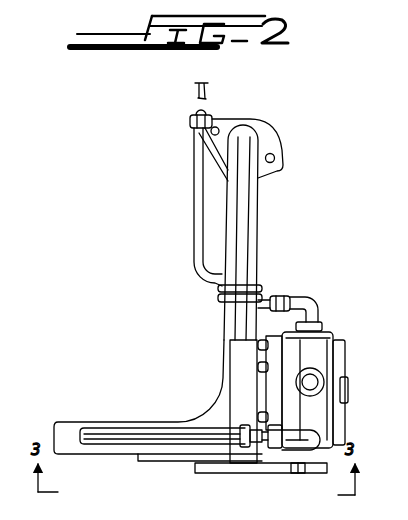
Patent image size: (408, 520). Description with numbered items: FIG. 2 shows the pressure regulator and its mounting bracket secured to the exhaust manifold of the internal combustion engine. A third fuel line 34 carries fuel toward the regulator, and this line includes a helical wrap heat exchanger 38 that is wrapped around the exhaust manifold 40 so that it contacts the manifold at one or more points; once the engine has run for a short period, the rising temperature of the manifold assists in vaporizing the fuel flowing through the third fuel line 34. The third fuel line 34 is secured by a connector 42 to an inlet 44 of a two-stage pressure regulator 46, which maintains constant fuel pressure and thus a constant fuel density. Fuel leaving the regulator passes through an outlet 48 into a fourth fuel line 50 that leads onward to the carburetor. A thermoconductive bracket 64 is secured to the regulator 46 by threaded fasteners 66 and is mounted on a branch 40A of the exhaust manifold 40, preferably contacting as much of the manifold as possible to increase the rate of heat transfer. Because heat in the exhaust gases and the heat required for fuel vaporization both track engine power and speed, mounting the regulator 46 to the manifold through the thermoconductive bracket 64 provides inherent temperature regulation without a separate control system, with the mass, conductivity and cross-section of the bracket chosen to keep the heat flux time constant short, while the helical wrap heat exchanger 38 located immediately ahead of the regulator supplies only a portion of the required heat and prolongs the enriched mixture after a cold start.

The third fuel line 34 is at (194, 222).
The helical wrap heat exchanger 38 is at (212, 301).
The exhaust manifold 40 is at (252, 211).
The branch of the exhaust manifold 40A is at (88, 432).
The connector 42 is at (303, 298).
The inlet 44 is at (320, 328).
The two-stage pressure regulator 46 is at (341, 362).
The outlet 48 is at (287, 456).
The fourth fuel line 50 is at (112, 446).
The thermoconductive bracket 64 is at (245, 368).
The threaded fasteners 66 is at (302, 474).